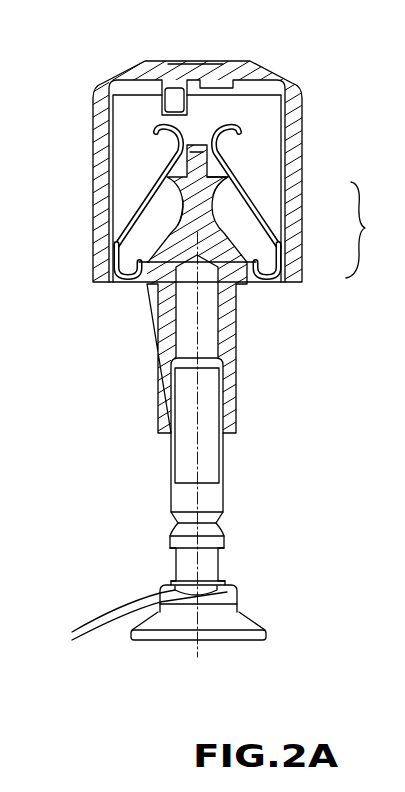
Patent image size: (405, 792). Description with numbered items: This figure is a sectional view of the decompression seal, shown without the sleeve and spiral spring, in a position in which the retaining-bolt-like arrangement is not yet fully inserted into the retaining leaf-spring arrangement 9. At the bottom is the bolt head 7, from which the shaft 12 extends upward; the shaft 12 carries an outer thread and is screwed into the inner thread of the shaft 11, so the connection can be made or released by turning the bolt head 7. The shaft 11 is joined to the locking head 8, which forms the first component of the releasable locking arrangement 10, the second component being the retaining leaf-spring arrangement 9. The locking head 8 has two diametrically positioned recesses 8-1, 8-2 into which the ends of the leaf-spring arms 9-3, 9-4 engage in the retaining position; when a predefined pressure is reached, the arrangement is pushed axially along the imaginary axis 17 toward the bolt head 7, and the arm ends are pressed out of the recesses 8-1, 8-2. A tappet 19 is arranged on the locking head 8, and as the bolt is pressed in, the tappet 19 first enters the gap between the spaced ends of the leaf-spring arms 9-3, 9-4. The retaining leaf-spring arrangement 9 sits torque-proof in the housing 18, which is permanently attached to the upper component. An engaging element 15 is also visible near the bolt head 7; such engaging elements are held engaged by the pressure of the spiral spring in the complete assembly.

The bolt head 7 is at (173, 620).
The locking head 8 is at (213, 204).
The recess 8-1 is at (184, 204).
The recess 8-2 is at (216, 190).
The retaining leaf-spring arrangement 9 is at (197, 197).
The leaf-spring arm 9-3 is at (184, 143).
The leaf-spring arm 9-4 is at (214, 147).
The locking arrangement 10 is at (214, 158).
The shaft 11 is at (222, 332).
The shaft 12 is at (212, 463).
The engaging element 15 is at (137, 634).
The imaginary axis 17 is at (197, 79).
The housing 18 is at (121, 81).
The tappet 19 is at (197, 152).